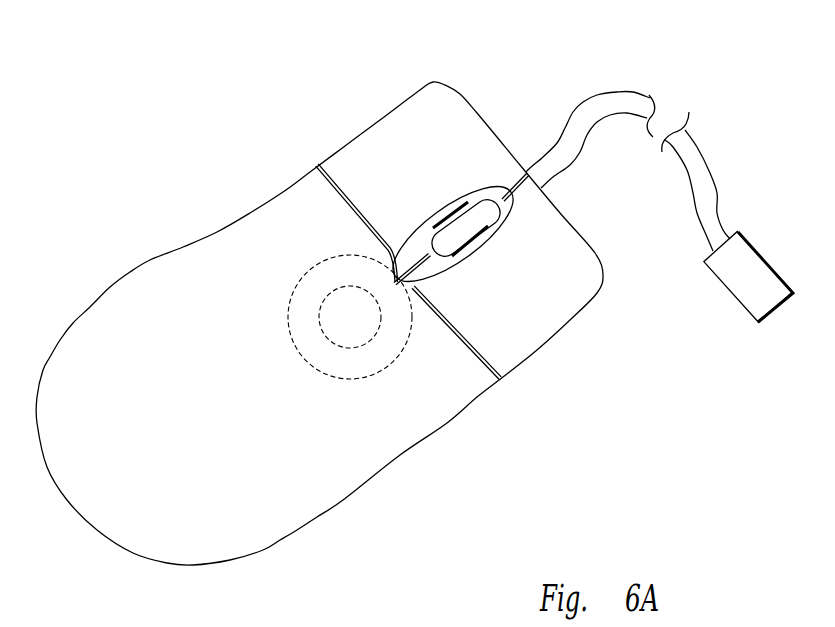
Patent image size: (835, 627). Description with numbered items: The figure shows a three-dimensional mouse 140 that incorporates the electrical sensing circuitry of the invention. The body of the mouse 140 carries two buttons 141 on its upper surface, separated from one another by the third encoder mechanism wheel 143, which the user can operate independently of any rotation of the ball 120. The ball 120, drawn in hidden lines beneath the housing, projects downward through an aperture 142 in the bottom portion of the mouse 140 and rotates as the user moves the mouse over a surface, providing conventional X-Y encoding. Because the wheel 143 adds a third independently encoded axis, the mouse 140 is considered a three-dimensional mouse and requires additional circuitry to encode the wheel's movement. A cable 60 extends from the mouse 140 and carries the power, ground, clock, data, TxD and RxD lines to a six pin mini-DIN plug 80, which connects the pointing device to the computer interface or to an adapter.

The cable 60 is at (583, 100).
The six pin mini-DIN plug 80 is at (727, 285).
The ball 120 is at (410, 343).
The mouse 140 is at (417, 528).
The buttons 141 is at (380, 142).
The aperture 142 is at (350, 348).
The third encoder mechanism wheel 143 is at (485, 215).